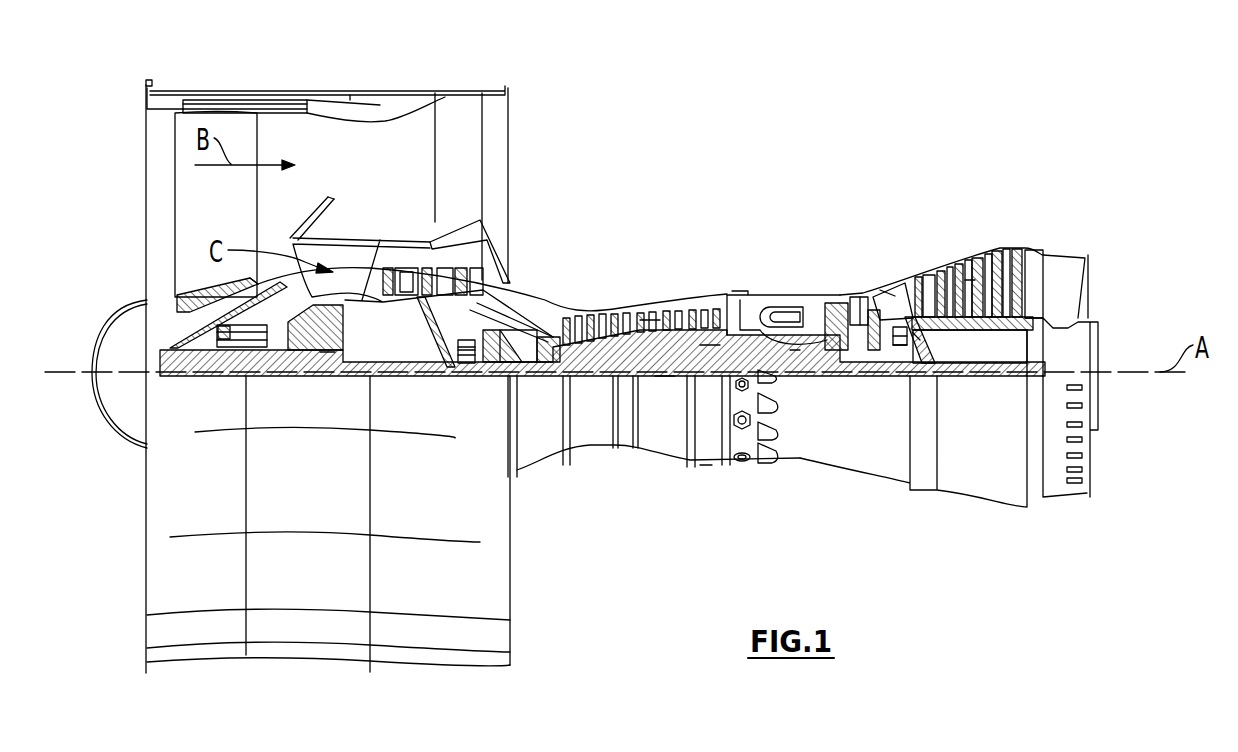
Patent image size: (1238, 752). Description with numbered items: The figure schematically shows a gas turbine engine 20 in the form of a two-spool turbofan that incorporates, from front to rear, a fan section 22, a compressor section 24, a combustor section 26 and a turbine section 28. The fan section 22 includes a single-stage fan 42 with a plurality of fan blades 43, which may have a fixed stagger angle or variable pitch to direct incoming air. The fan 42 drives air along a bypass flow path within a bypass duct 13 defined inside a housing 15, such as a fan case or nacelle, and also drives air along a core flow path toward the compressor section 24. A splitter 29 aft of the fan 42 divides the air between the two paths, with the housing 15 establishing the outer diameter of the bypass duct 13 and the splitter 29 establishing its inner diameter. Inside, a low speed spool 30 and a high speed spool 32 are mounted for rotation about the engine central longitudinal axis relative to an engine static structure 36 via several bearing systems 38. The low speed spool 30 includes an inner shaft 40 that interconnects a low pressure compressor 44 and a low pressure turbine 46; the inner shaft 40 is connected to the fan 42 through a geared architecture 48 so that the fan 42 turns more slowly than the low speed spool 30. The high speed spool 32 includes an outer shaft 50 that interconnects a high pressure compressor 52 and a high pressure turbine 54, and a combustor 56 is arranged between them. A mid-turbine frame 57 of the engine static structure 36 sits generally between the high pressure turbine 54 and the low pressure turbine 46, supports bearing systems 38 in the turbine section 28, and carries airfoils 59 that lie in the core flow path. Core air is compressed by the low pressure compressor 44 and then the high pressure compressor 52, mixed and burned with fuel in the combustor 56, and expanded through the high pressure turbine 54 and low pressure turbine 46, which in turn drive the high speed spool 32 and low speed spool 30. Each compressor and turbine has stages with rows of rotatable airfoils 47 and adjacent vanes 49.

The bypass duct 13 is at (382, 121).
The housing 15 is at (328, 91).
The gas turbine engine 20 is at (790, 137).
The fan section 22 is at (256, 78).
The compressor section 24 is at (560, 283).
The combustor section 26 is at (784, 266).
The turbine section 28 is at (928, 232).
The splitter 29 is at (327, 236).
The low speed spool 30 is at (665, 382).
The high speed spool 32 is at (705, 340).
The engine static structure 36 is at (706, 472).
The bearing systems 38 is at (465, 362).
The inner shaft 40 is at (528, 376).
The fan 42 is at (228, 213).
The fan blades 43 is at (250, 220).
The low pressure compressor 44 is at (430, 282).
The low pressure turbine 46 is at (972, 262).
The rotatable airfoils 47 is at (388, 272).
The geared architecture 48 is at (328, 362).
The vanes 49 is at (408, 275).
The outer shaft 50 is at (795, 356).
The high pressure compressor 52 is at (648, 307).
The high pressure turbine 54 is at (863, 293).
The combustor 56 is at (785, 317).
The mid-turbine frame 57 is at (893, 283).
The airfoils 59 is at (917, 336).